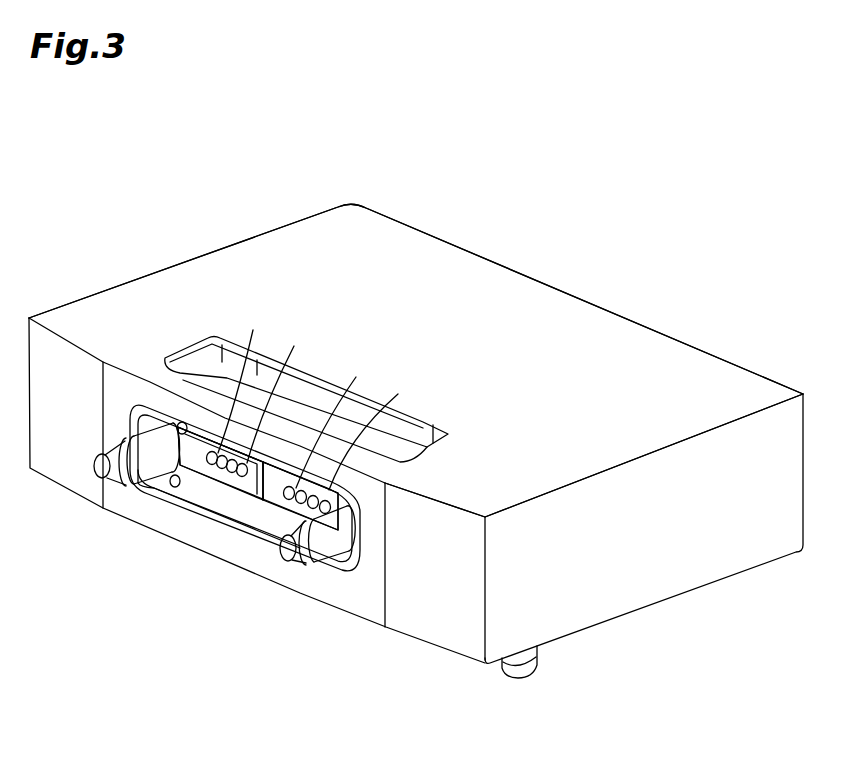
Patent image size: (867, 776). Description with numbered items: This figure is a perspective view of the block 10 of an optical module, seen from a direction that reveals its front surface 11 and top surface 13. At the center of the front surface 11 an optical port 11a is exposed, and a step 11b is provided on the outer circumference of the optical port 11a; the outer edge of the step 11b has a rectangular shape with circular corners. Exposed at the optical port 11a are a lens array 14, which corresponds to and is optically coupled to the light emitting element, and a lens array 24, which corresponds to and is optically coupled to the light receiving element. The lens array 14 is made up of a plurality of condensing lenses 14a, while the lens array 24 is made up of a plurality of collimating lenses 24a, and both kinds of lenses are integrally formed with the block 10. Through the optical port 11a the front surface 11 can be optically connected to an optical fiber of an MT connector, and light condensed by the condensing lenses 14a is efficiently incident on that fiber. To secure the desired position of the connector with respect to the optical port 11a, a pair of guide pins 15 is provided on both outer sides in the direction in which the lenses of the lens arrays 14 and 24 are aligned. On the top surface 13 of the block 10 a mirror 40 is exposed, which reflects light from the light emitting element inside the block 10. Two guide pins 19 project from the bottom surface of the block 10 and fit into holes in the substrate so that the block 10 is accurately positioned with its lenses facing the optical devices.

The block 10 is at (594, 219).
The top surface 13 is at (267, 238).
The lens array 14 is at (252, 388).
The condensing lenses 14a is at (212, 453).
The lens array 24 is at (346, 426).
The collimating lenses 24a is at (290, 488).
The mirror 40 is at (409, 416).
The guide pins 15 is at (95, 472).
The front surface 11 is at (238, 555).
The optical port 11a is at (221, 517).
The step 11b is at (187, 512).
The guide pins 19 is at (519, 679).